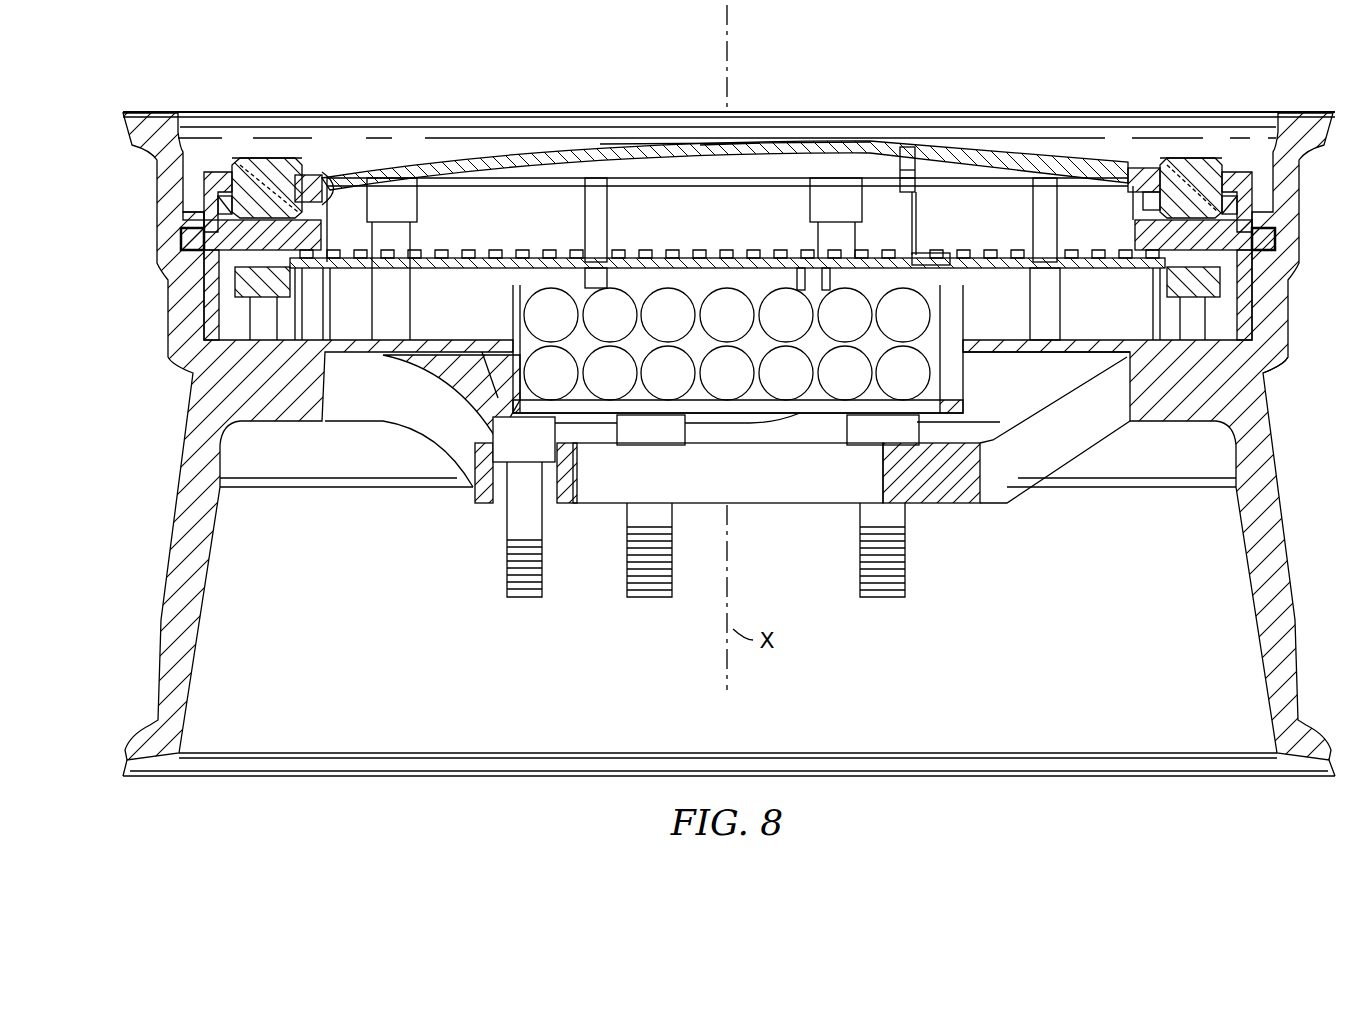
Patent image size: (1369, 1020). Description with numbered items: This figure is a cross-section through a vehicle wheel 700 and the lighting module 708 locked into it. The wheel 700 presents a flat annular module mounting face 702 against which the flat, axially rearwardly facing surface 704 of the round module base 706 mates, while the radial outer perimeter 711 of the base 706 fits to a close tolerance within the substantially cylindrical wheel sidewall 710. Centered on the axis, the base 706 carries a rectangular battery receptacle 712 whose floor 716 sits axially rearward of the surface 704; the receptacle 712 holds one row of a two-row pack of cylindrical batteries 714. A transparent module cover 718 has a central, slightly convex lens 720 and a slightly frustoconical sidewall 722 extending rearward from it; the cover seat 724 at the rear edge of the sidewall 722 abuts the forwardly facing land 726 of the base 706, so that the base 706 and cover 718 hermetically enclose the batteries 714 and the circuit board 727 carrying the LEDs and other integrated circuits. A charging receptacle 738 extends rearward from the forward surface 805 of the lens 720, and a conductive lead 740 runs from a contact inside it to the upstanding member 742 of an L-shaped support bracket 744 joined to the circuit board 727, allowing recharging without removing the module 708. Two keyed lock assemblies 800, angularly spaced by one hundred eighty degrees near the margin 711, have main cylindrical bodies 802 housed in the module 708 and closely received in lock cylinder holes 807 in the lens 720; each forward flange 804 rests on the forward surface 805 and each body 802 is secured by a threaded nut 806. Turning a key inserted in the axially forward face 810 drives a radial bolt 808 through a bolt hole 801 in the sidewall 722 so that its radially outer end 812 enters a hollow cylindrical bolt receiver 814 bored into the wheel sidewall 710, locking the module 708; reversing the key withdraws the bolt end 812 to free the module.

The vehicle wheel 700 is at (160, 568).
The module mounting face 702 is at (1177, 347).
The axially rearwardly facing surface 704 is at (427, 350).
The base 706 is at (352, 350).
The lighting module 708 is at (1122, 140).
The wheel sidewall 710 is at (1250, 278).
The radial outer perimeter 711 is at (1262, 362).
The battery receptacle 712 is at (960, 384).
The batteries 714 is at (709, 324).
The floor 716 is at (783, 413).
The module cover 718 is at (410, 142).
The lens 720 is at (825, 148).
The sidewall 722 is at (212, 305).
The cover seat 724 is at (210, 332).
The land 726 is at (1256, 332).
The circuit board 727 is at (515, 262).
The charging receptacle 738 is at (910, 175).
The conductive lead 740 is at (920, 190).
The upstanding member 742 is at (920, 230).
The support bracket 744 is at (940, 268).
The keyed lock assembly 800 is at (237, 140).
The bolt holes 801 is at (1255, 240).
The main cylindrical body 802 is at (265, 165).
The forward flange 804 is at (203, 178).
The forward surface 805 is at (760, 140).
The threaded nut 806 is at (330, 178).
The lock cylinder hole 807 is at (1243, 170).
The bolt 808 is at (310, 238).
The axially forward face 810 is at (1188, 155).
The radially outer end 812 is at (190, 238).
The bolt receiver 814 is at (185, 222).